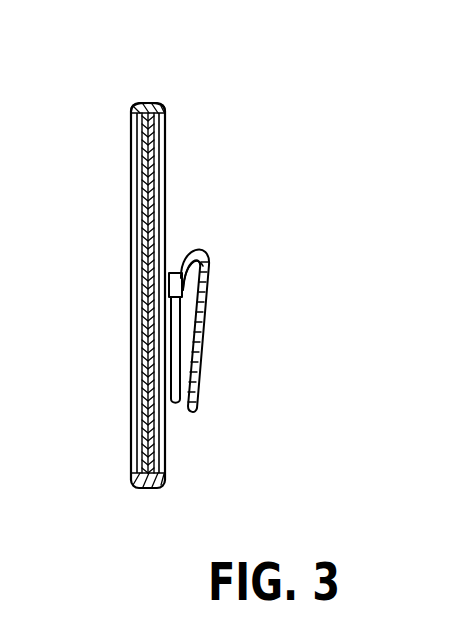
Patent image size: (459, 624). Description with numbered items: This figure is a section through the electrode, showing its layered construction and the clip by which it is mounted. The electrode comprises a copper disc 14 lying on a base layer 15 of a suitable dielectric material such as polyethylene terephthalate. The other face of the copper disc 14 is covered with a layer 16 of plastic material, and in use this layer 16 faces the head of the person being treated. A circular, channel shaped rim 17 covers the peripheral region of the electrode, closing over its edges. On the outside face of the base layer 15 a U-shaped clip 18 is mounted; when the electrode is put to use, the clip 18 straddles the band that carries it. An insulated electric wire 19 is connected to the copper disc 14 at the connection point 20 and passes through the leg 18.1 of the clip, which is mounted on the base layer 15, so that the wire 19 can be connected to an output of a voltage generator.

The copper disc 14 is at (150, 153).
The base layer 15 is at (158, 193).
The layer of plastic material 16 is at (137, 207).
The channel shaped rim 17 is at (148, 103).
The U-shaped clip 18 is at (211, 258).
The leg 18.1 is at (184, 290).
The insulated electric wire 19 is at (174, 403).
The connection point 20 is at (169, 293).